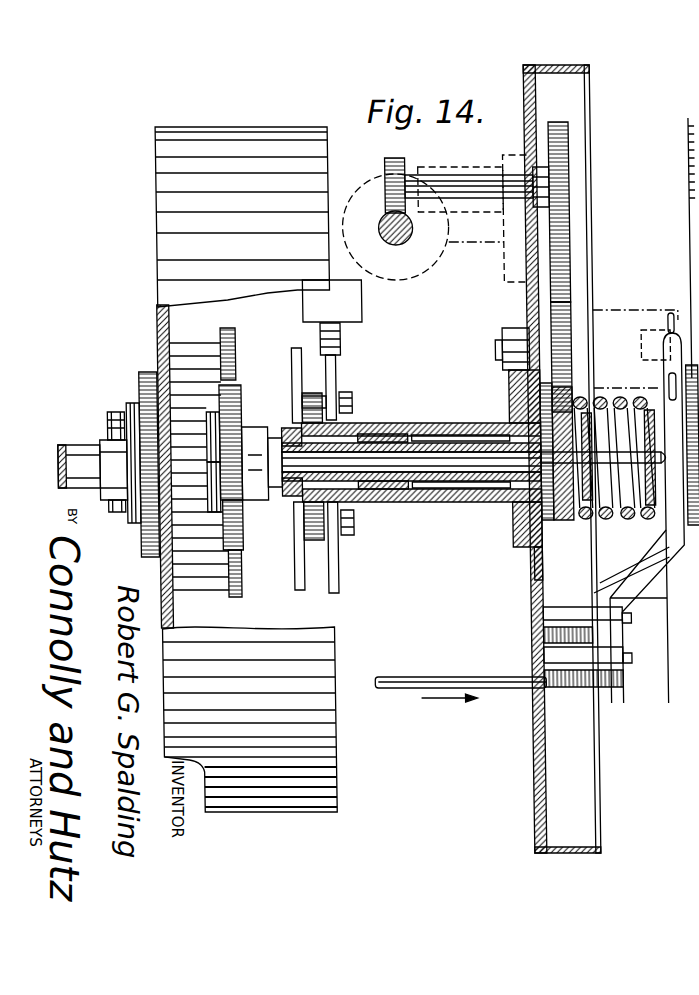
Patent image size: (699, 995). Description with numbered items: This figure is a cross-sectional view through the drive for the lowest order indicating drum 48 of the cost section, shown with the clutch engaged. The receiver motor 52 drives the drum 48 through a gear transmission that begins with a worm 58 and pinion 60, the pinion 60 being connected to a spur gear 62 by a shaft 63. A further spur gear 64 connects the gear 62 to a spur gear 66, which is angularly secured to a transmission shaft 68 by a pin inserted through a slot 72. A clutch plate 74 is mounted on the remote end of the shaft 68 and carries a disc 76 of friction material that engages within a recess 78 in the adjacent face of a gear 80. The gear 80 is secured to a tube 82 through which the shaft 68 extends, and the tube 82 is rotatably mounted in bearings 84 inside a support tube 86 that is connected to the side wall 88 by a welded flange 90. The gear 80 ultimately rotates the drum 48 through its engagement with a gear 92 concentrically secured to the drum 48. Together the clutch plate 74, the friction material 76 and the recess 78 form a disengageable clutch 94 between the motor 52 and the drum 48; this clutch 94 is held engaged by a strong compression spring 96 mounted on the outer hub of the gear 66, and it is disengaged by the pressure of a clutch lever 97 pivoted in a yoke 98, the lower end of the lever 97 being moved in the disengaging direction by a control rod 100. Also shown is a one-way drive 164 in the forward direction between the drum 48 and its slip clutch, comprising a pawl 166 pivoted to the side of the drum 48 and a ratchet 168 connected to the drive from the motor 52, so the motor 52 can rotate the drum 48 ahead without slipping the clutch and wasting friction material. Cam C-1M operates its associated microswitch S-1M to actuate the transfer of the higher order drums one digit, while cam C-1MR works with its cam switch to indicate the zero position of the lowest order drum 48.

The indicating drum 48 is at (273, 143).
The receiver motor 52 is at (432, 262).
The worm 58 is at (393, 210).
The pinion 60 is at (410, 163).
The spur gear 62 is at (579, 160).
The shaft 63 is at (577, 222).
The spur gear 64 is at (578, 290).
The spur gear 66 is at (557, 540).
The transmission shaft 68 is at (354, 467).
The slot 72 is at (515, 422).
The clutch plate 74 is at (210, 432).
The disc of friction material 76 is at (212, 482).
The recess 78 is at (244, 402).
The gear 80 is at (243, 522).
The tube 82 is at (353, 512).
The bearings 84 is at (402, 438).
The support tube 86 is at (425, 503).
The side wall 88 is at (529, 767).
The welded flange 90 is at (514, 522).
The gear 92 is at (238, 590).
The disengageable clutch 94 is at (214, 400).
The compression spring 96 is at (636, 382).
The clutch lever 97 is at (632, 572).
The yoke 98 is at (635, 318).
The control rod 100 is at (492, 660).
The one-way drive 164 is at (134, 412).
The pawl 166 is at (110, 420).
The ratchet 168 is at (119, 512).
The microswitch S-1M is at (350, 310).
The cam C-1M is at (343, 372).
The cam C-1MR is at (296, 372).